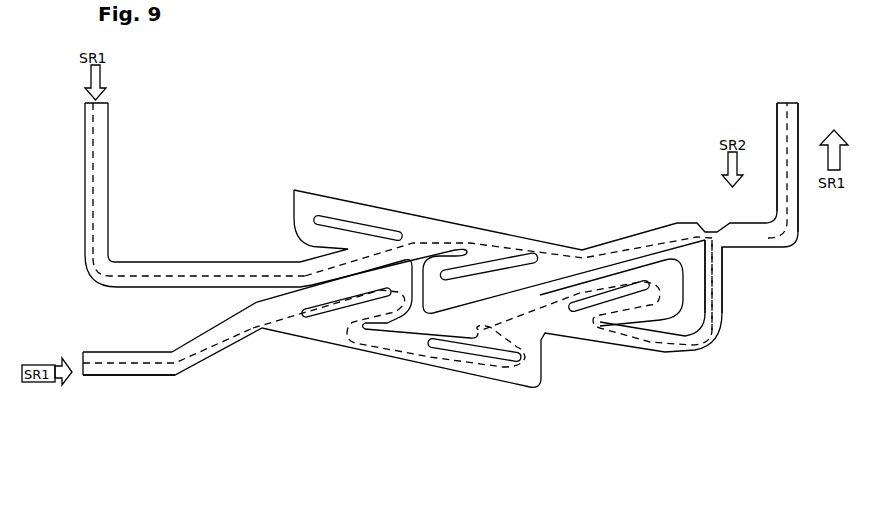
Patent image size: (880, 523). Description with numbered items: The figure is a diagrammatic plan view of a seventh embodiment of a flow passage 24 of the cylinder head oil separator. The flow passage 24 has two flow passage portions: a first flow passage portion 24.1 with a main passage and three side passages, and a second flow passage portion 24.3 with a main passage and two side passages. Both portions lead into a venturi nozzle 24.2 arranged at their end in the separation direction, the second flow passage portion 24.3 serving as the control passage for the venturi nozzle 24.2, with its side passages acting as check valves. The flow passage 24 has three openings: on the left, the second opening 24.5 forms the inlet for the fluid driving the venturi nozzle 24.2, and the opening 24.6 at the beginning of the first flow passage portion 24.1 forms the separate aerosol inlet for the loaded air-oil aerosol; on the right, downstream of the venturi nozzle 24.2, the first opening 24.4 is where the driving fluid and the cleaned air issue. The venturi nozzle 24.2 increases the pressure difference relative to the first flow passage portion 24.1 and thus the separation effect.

The flow passage 24 is at (233, 237).
The first flow passage portion 24.1 is at (136, 363).
The venturi nozzle 24.2 is at (720, 247).
The second flow passage portion 24.3 is at (135, 282).
The first opening 24.4 is at (795, 110).
The second opening 24.5 is at (110, 110).
The opening 24.6 is at (82, 362).